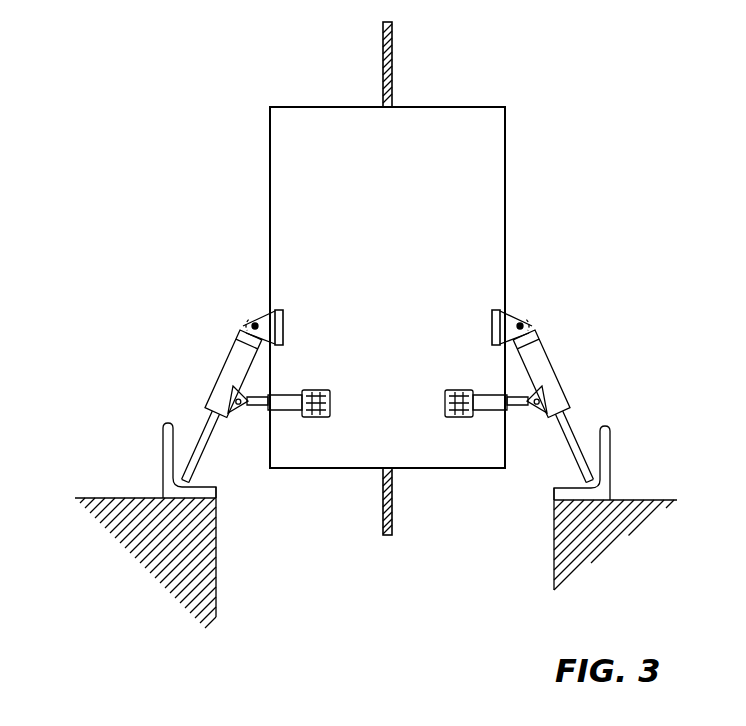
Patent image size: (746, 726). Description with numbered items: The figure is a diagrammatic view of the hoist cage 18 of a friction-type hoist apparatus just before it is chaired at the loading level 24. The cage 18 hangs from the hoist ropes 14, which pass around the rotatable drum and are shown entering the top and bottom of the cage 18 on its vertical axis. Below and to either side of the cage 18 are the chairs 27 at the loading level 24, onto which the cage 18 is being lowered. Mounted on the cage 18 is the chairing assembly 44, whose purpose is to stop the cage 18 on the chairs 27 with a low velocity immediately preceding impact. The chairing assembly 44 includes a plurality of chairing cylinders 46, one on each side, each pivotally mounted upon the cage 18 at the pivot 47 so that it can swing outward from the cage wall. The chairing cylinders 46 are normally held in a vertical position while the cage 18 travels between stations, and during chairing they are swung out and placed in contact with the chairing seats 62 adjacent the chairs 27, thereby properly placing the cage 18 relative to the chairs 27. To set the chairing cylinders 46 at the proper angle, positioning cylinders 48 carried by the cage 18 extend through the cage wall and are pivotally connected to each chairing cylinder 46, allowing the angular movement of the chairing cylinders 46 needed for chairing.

The hoist ropes 14 is at (391, 52).
The hoist cage 18 is at (497, 143).
The loading level 24 is at (125, 498).
The chairs 27 is at (82, 516).
The chairing assembly 44 is at (365, 398).
The chairing cylinders 46 is at (240, 355).
The pivotal mounting 47 is at (253, 324).
The positioning cylinders 48 is at (280, 412).
The chairing seats 62 is at (197, 493).